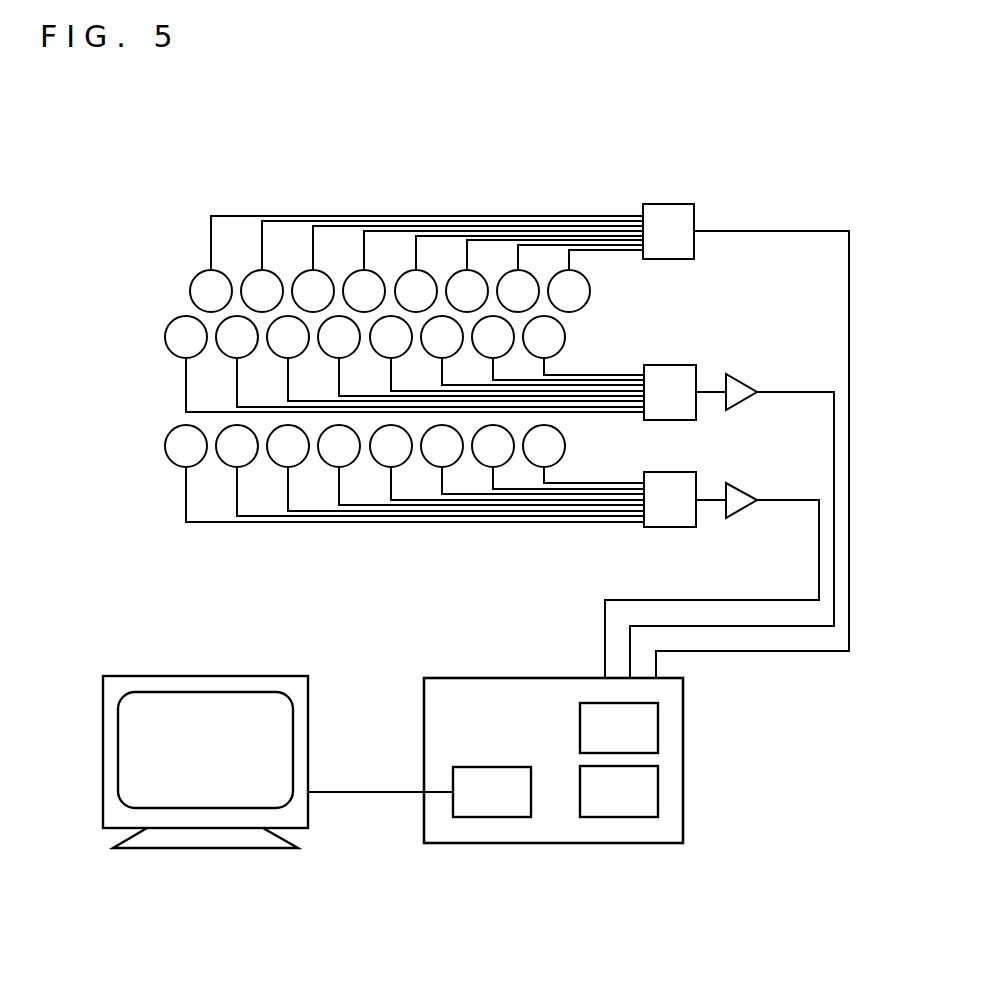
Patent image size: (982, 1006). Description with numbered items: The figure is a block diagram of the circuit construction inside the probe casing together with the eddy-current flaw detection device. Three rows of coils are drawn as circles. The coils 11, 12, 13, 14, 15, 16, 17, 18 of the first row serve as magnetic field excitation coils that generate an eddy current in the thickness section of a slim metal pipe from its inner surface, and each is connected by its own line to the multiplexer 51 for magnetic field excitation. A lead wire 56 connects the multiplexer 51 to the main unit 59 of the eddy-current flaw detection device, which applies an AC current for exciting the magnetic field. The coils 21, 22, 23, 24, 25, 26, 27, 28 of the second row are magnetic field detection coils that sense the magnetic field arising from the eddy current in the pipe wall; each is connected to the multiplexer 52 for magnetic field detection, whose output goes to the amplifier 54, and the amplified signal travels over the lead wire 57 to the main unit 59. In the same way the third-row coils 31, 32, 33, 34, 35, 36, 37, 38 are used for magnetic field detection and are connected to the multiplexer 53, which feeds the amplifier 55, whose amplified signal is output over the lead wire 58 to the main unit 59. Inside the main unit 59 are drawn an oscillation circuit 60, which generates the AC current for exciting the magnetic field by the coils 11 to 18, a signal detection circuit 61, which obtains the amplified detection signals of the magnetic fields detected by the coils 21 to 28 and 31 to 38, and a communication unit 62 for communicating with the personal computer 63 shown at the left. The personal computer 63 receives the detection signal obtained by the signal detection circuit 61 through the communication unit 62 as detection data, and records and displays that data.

The coil 11 is at (345, 264).
The coil 12 is at (442, 266).
The coil 13 is at (467, 269).
The coil 14 is at (493, 271).
The coil 15 is at (519, 274).
The coil 16 is at (544, 276).
The coil 17 is at (570, 278).
The coil 18 is at (595, 281).
The coil 21 is at (346, 362).
The coil 22 is at (430, 361).
The coil 23 is at (455, 358).
The coil 24 is at (481, 356).
The coil 25 is at (507, 353).
The coil 26 is at (532, 350).
The coil 27 is at (558, 348).
The coil 28 is at (583, 345).
The coil 31 is at (346, 472).
The coil 32 is at (430, 470).
The coil 33 is at (455, 468).
The coil 34 is at (481, 465).
The coil 35 is at (507, 462).
The coil 36 is at (532, 459).
The coil 37 is at (558, 457).
The coil 38 is at (583, 454).
The multiplexer for magnetic field excitation 51 is at (668, 210).
The multiplexer for magnetic field detection 52 is at (672, 372).
The multiplexer for magnetic field detection 53 is at (672, 522).
The amplifier 54 is at (746, 385).
The amplifier 55 is at (745, 490).
The lead wire 56 is at (737, 229).
The lead wire 57 is at (790, 391).
The lead wire 58 is at (777, 502).
The main unit of the eddy-current flaw detection device 59 is at (685, 760).
The oscillation circuit 60 is at (645, 726).
The signal detection circuit 61 is at (648, 800).
The communication unit 62 is at (483, 767).
The personal computer 63 is at (308, 716).